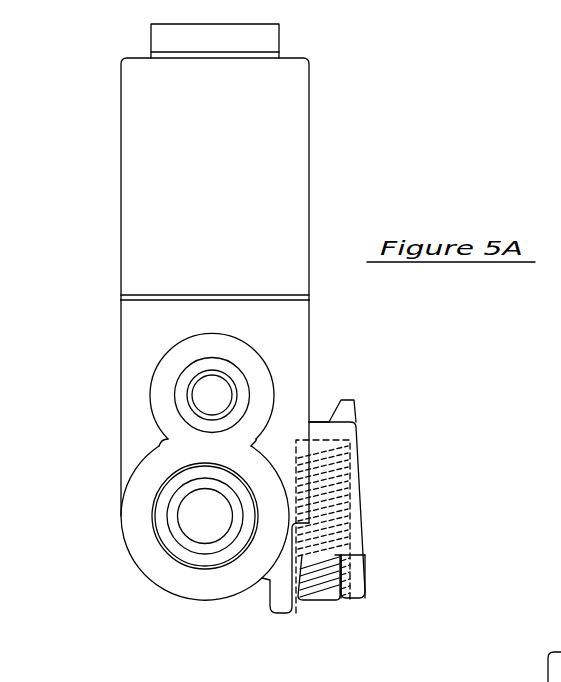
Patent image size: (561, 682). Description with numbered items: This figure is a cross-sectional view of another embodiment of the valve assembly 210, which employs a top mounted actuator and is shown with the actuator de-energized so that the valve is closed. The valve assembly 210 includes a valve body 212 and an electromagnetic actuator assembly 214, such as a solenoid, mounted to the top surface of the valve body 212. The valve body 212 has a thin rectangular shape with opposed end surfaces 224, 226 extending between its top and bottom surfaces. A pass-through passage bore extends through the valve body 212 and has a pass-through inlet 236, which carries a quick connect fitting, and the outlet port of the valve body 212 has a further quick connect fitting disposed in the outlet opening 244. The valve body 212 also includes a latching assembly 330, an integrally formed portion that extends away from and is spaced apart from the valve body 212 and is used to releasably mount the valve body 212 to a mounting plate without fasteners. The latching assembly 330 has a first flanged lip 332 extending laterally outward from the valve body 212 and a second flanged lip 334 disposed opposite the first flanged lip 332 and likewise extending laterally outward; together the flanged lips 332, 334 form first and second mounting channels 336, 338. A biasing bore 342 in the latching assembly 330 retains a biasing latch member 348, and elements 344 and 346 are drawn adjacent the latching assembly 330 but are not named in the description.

The valve assembly 210 is at (261, 353).
The valve body 212 is at (119, 347).
The electromagnetic actuator assembly 214 is at (308, 203).
The end surface 224 is at (119, 313).
The end surface 226 is at (308, 322).
The pass-through inlet 236 is at (177, 532).
The outlet opening 244 is at (190, 397).
The latching assembly 330 is at (363, 483).
The first flanged lip 332 is at (356, 402).
The second flanged lip 334 is at (293, 616).
The first mounting channel 336 is at (320, 422).
The second mounting channel 338 is at (322, 603).
The biasing bore 342 is at (350, 523).
The fastener tip 344 is at (344, 603).
The bore opening 346 is at (347, 437).
The biasing latch member 348 is at (347, 497).